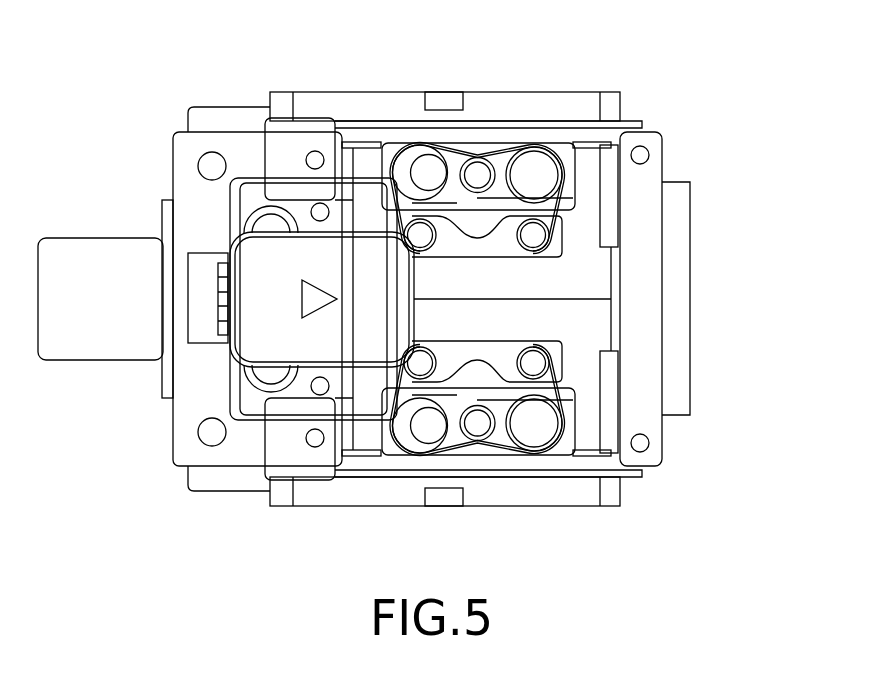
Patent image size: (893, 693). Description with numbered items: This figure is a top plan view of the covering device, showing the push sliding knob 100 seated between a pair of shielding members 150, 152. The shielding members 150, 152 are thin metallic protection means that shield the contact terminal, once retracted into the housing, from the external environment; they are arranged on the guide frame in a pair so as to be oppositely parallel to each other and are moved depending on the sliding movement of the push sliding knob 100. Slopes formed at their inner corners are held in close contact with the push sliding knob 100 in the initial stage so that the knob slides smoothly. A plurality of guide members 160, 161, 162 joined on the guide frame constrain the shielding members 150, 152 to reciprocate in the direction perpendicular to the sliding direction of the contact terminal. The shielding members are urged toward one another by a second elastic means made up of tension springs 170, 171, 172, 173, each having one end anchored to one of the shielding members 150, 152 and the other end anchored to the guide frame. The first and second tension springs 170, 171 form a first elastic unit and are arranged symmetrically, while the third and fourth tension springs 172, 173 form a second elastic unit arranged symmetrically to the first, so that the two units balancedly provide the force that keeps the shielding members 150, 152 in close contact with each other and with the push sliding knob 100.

The push sliding knob 100 is at (263, 257).
The shielding member 150 is at (597, 330).
The shielding member 152 is at (598, 277).
The guide member 160 is at (322, 463).
The guide member 161 is at (288, 130).
The guide member 162 is at (640, 392).
The first tension spring 170 is at (407, 450).
The second tension spring 171 is at (537, 450).
The third tension spring 172 is at (400, 153).
The fourth tension spring 173 is at (527, 153).